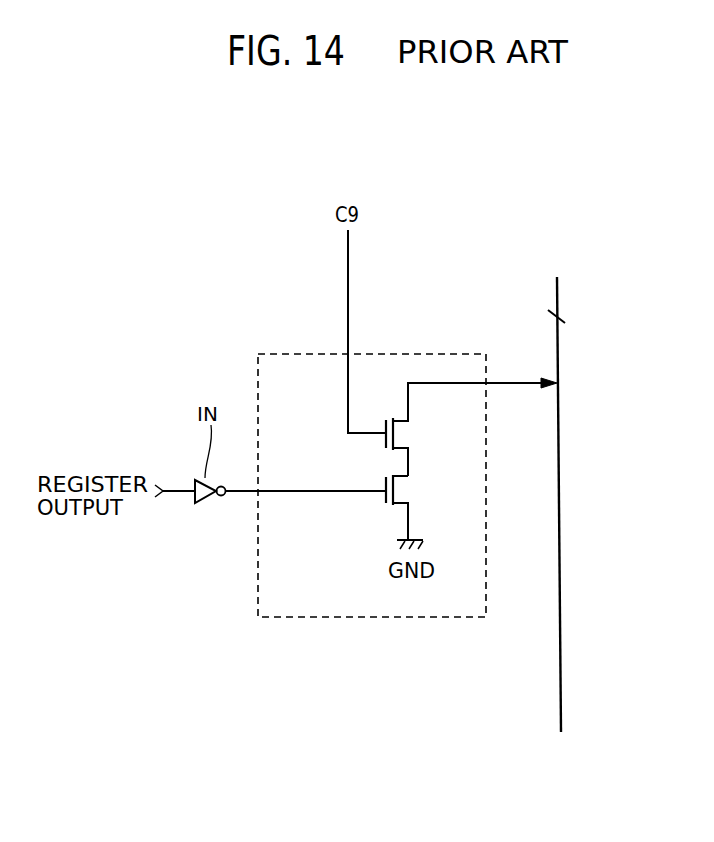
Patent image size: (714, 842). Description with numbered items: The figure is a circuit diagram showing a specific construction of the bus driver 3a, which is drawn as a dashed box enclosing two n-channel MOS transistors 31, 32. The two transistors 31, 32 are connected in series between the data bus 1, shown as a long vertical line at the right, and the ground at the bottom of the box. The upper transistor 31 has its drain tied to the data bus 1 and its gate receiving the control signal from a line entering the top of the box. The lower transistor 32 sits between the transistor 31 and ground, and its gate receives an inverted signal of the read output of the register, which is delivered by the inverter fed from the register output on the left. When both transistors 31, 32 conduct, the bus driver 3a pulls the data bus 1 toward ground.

The data bus 1 is at (557, 357).
The bus driver 3a is at (428, 352).
The n-channel MOS transistor 31 is at (400, 434).
The n-channel MOS transistor 32 is at (400, 490).